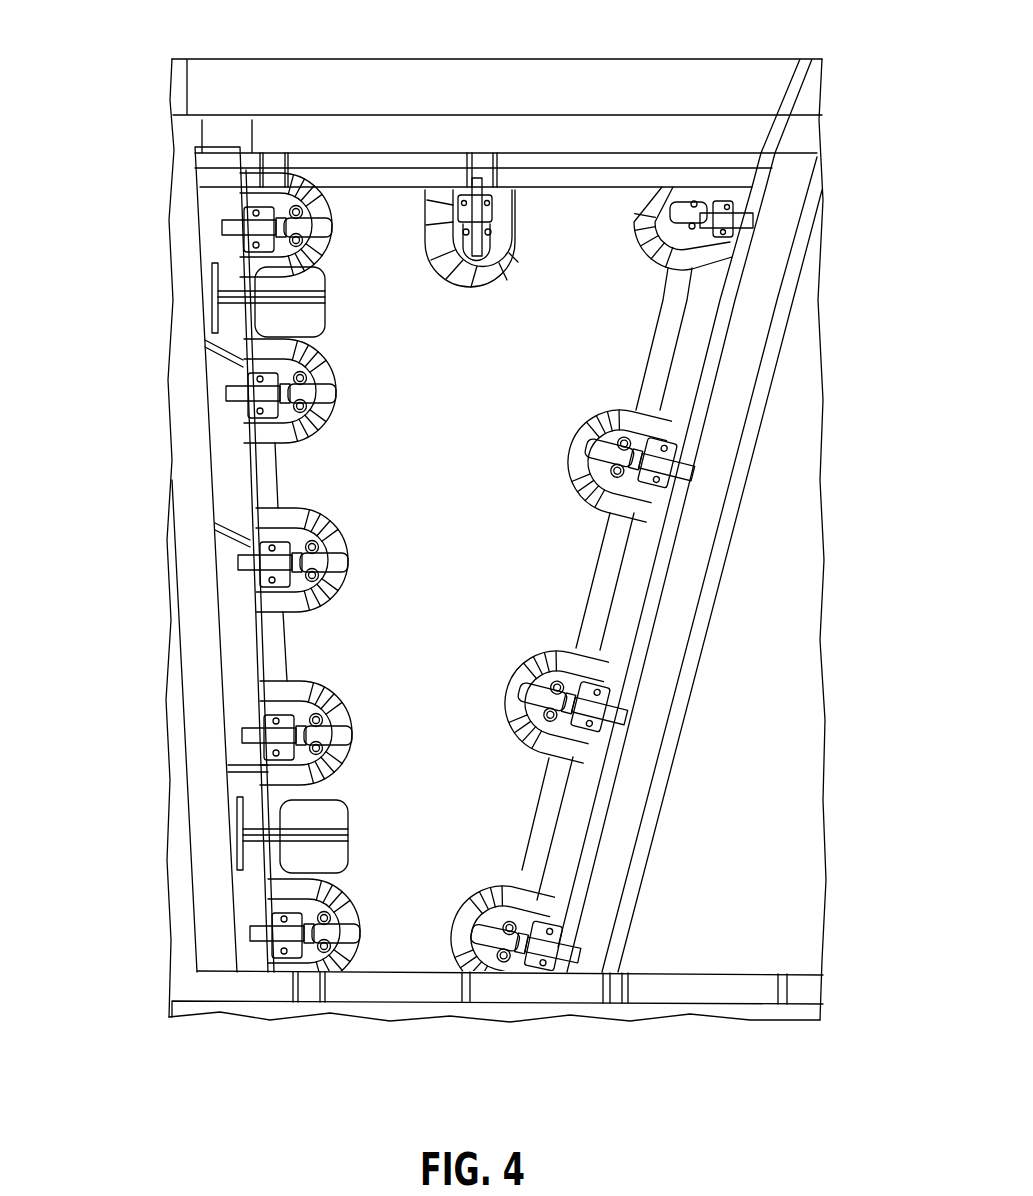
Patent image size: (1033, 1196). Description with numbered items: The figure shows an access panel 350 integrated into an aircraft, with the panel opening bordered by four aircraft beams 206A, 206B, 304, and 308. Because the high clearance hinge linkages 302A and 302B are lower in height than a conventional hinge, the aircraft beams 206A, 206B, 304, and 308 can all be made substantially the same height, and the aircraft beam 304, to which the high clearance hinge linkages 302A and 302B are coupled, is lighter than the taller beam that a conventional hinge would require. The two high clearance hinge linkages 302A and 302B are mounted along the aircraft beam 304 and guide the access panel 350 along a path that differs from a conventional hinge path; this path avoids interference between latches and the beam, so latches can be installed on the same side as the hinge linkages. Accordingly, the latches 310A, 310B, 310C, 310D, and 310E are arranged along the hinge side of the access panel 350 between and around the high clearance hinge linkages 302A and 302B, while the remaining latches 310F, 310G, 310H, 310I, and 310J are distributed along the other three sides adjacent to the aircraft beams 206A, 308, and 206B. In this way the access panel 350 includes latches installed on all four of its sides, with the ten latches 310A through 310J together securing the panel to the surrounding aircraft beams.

The aircraft beam 206A is at (500, 128).
The aircraft beam 206B is at (415, 995).
The high clearance hinge linkage 302A is at (196, 290).
The high clearance hinge linkage 302B is at (222, 836).
The aircraft beam 304 is at (200, 904).
The aircraft beam 308 is at (614, 855).
The latch 310A is at (240, 936).
The latch 310B is at (240, 734).
The latch 310C is at (222, 561).
The latch 310D is at (214, 392).
The latch 310E is at (213, 226).
The latch 310F is at (458, 188).
The latch 310G is at (753, 208).
The latch 310H is at (684, 488).
The latch 310I is at (618, 711).
The latch 310J is at (533, 965).
The access panel 350 is at (556, 415).